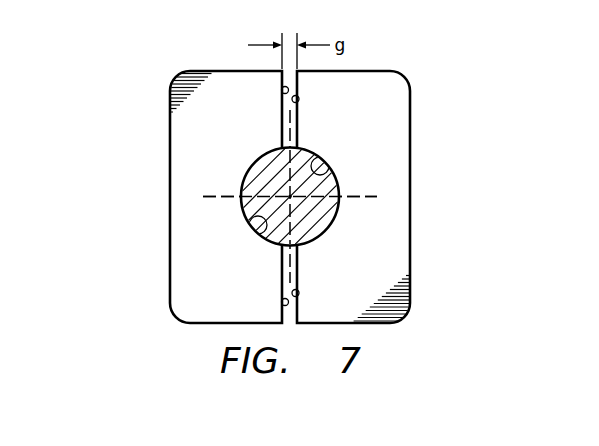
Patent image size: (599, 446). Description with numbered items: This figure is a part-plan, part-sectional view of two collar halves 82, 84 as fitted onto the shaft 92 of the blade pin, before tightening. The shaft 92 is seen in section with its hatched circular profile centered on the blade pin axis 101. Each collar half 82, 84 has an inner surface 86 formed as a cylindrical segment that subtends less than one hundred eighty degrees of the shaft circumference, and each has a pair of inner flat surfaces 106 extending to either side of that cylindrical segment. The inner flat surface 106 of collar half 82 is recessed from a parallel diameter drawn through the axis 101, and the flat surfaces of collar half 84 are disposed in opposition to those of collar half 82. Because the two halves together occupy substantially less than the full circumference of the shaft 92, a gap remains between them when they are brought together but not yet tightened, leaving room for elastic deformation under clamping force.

The collar half 82 is at (410, 199).
The collar half 84 is at (170, 197).
The surface 86 is at (327, 167).
The shaft 92 is at (292, 232).
The blade pin axis 101 is at (289, 196).
The inner flat surface 106 is at (282, 91).